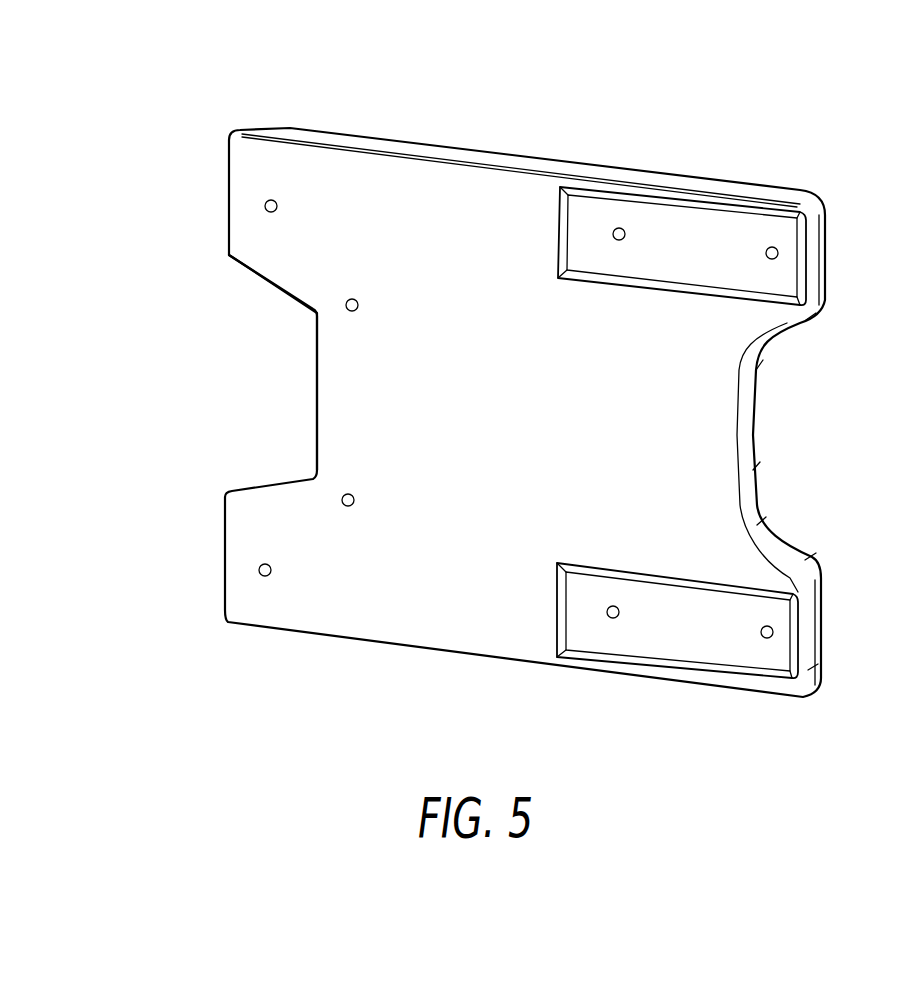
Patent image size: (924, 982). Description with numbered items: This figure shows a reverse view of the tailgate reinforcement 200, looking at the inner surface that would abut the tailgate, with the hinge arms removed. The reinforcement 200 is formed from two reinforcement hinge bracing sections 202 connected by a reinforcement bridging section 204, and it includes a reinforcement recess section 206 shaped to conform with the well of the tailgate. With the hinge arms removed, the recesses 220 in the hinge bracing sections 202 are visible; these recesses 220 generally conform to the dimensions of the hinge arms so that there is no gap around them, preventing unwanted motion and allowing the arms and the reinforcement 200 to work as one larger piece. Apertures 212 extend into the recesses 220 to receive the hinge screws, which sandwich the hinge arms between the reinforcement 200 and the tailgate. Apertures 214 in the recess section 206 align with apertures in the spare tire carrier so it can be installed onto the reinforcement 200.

The tailgate reinforcement 200 is at (520, 394).
The reinforcement hinge bracing section 202 is at (423, 182).
The reinforcement bridging section 204 is at (690, 432).
The reinforcement recess section 206 is at (400, 390).
The aperture 212 is at (768, 640).
The aperture 214 is at (257, 573).
The recess 220 is at (780, 278).